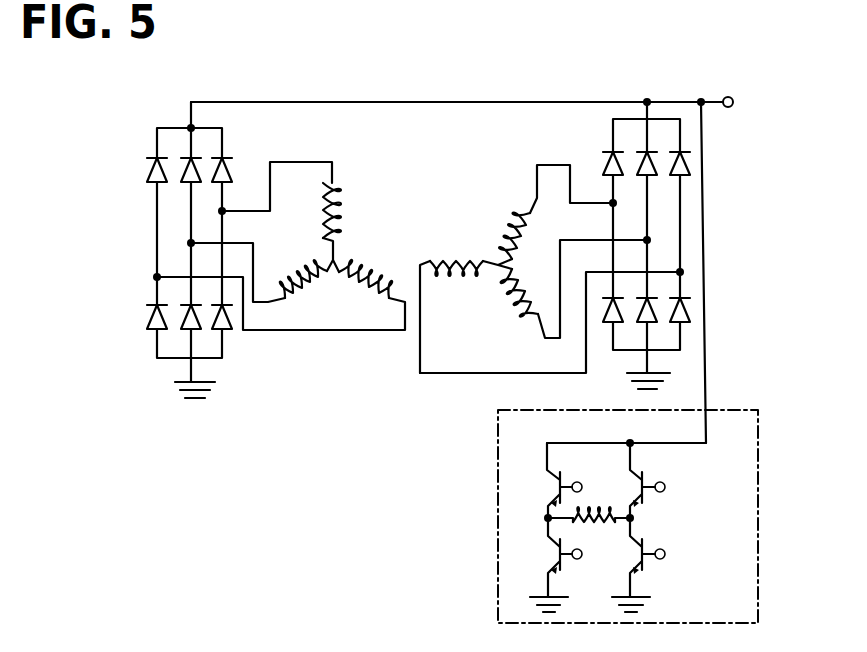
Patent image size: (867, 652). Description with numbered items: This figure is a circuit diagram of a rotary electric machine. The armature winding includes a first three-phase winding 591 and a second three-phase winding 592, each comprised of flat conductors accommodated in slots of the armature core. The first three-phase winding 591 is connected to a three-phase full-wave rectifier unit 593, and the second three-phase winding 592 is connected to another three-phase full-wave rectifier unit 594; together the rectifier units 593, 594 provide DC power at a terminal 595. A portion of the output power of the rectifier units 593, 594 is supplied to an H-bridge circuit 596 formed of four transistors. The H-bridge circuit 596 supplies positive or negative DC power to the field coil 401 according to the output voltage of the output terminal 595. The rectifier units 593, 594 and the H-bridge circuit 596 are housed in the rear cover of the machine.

The field coil 401 is at (592, 507).
The first three-phase winding 591 is at (347, 212).
The second three-phase winding 592 is at (512, 212).
The three-phase full-wave rectifier unit 593 is at (160, 200).
The three-phase full-wave rectifier unit 594 is at (667, 217).
The terminal 595 is at (733, 100).
The H-bridge circuit 596 is at (586, 516).